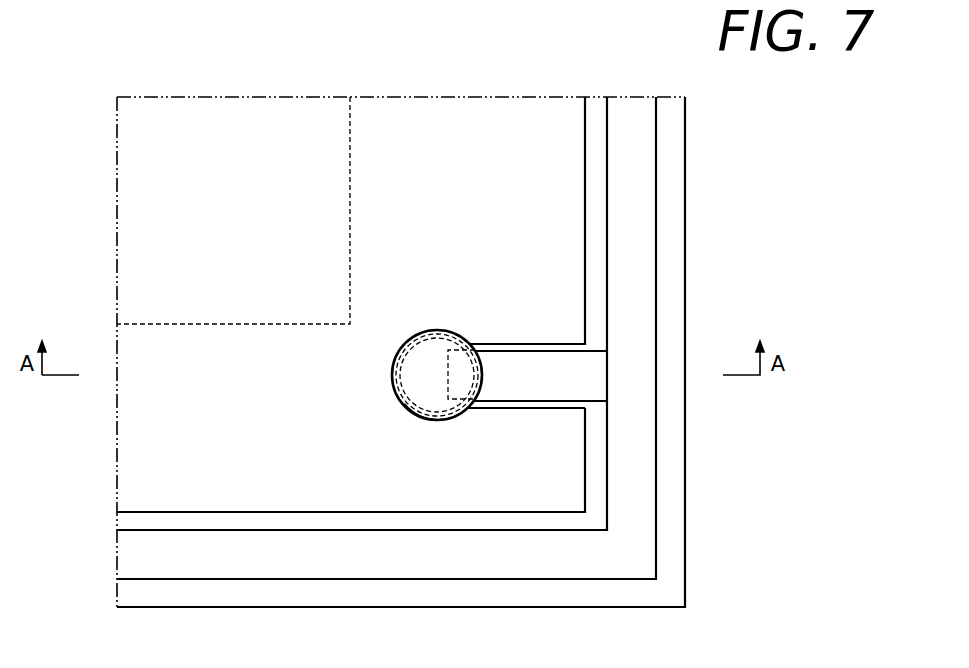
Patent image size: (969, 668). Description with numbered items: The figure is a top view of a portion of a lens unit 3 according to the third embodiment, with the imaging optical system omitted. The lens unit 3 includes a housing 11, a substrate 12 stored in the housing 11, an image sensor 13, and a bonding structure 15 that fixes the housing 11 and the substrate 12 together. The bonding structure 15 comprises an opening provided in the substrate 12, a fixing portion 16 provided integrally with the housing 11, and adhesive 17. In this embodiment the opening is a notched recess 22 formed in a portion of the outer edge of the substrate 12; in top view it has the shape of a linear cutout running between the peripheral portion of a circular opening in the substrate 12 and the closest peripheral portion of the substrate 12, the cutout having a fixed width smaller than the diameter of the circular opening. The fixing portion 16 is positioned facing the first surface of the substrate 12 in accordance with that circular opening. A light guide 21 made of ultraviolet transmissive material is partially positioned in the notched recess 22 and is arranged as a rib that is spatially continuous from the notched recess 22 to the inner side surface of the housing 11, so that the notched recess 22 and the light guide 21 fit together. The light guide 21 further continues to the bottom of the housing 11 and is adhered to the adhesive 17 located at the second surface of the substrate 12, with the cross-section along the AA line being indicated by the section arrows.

The lens unit 3 is at (420, 68).
The housing 11 is at (670, 185).
The substrate 12 is at (180, 432).
The image sensor 13 is at (322, 206).
The bonding structure 15 is at (444, 332).
The fixing portion 16 is at (445, 420).
The adhesive 17 is at (400, 402).
The light guide 21 is at (629, 127).
The notched recess 22 is at (540, 408).